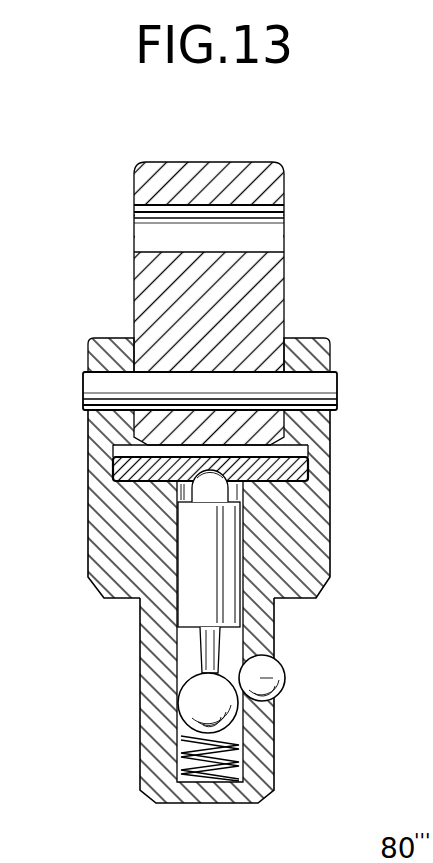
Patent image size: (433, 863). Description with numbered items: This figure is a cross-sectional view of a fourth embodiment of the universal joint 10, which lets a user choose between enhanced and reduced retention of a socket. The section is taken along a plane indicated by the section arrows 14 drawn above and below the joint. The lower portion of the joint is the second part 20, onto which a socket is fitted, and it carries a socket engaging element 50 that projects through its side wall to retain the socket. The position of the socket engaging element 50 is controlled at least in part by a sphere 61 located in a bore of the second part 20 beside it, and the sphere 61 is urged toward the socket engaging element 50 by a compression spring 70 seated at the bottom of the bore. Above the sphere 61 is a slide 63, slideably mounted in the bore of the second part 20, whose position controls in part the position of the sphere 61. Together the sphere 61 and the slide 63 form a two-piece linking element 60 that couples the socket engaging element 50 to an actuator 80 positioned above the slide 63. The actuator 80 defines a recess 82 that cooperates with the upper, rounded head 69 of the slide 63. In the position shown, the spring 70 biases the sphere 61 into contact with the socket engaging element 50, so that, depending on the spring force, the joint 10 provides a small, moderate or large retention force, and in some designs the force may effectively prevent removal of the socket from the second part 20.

The universal joint 10 is at (84, 497).
The second part 20 is at (112, 610).
The socket engaging element 50 is at (288, 683).
The linking element 60 is at (191, 657).
The sphere 61 is at (208, 705).
The slide 63 is at (243, 542).
The plunger head 69 is at (232, 491).
The compression spring 70 is at (246, 768).
The actuator 80 is at (113, 462).
The recess 82 is at (197, 478).
The section line 14- 14 is at (210, 273).